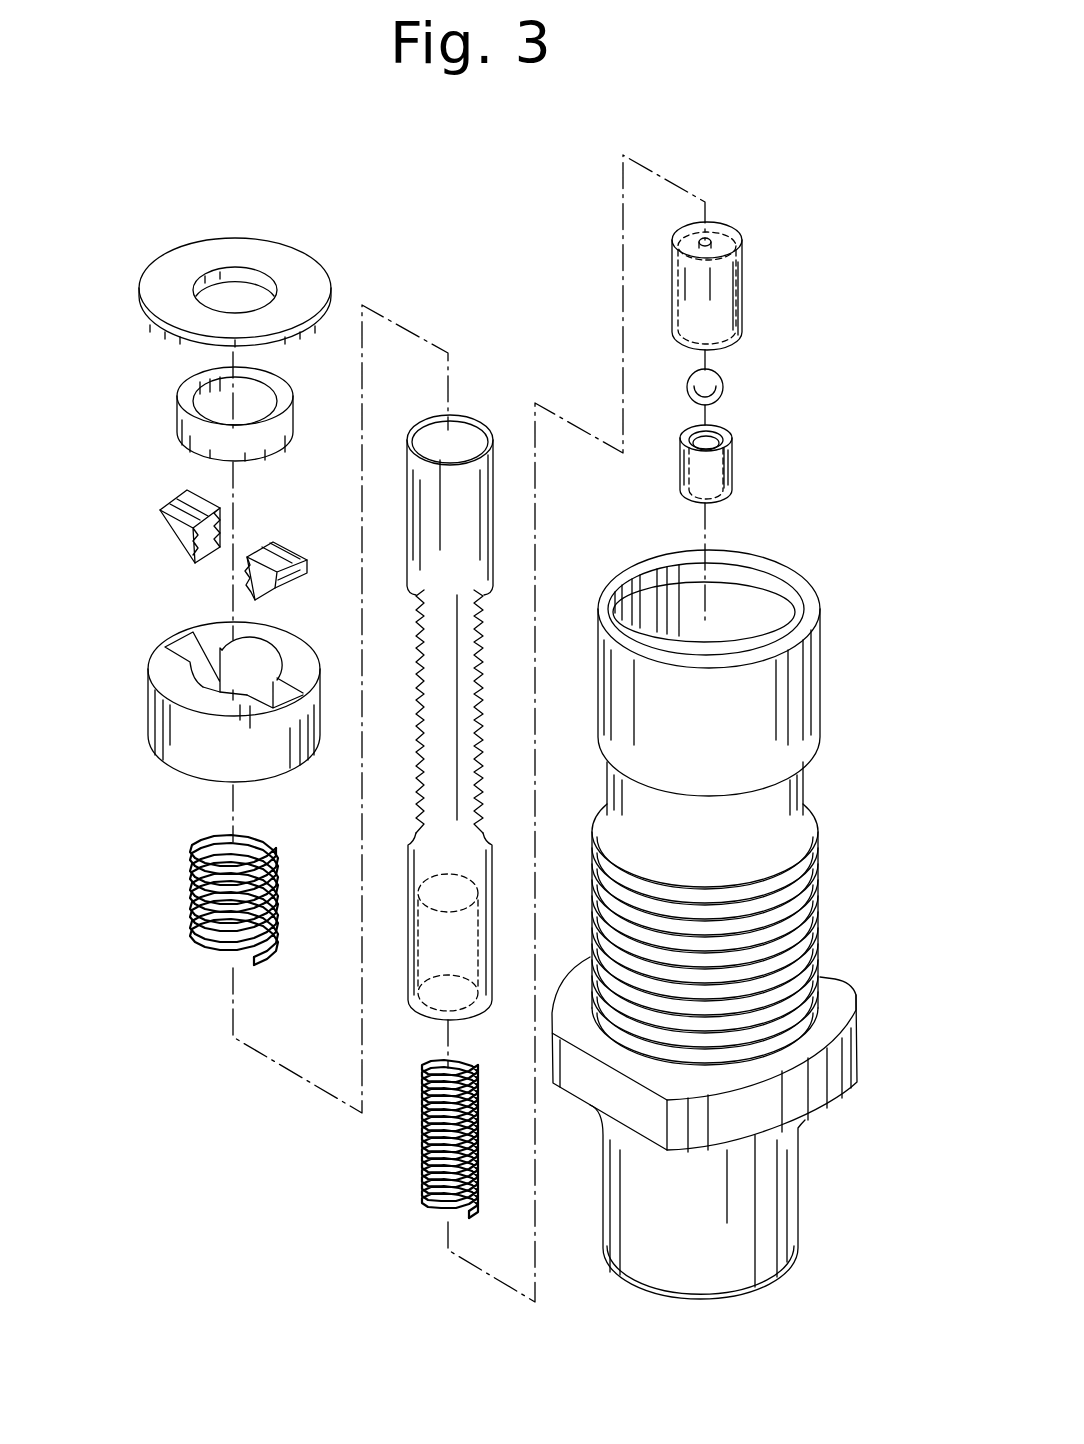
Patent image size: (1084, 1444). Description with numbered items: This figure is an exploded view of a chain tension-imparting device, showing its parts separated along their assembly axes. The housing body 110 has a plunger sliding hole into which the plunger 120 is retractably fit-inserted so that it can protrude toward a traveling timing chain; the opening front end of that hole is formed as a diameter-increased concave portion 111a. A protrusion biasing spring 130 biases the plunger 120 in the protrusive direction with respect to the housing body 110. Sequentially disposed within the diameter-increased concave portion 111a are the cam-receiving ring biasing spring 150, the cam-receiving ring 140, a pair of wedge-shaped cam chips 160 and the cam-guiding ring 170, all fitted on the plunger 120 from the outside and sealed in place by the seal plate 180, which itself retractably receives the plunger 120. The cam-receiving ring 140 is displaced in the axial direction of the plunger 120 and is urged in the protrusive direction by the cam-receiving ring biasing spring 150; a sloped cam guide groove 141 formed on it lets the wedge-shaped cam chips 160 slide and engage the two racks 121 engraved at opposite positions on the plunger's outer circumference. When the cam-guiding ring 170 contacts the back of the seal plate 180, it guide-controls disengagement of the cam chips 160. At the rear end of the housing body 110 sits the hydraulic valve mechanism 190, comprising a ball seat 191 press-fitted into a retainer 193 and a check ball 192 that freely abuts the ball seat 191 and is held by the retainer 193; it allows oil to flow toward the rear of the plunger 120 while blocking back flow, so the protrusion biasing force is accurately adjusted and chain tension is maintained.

The housing body 110 is at (744, 919).
The diameter-increased concave portion of the plunger sliding hole 111a is at (752, 609).
The plunger 120 is at (440, 665).
The rack 121 is at (415, 793).
The protrusion biasing spring 130 is at (420, 1172).
The cam-receiving ring 140 is at (209, 683).
The sloped cam guide groove 141 is at (187, 645).
The cam-receiving ring biasing spring 150 is at (190, 855).
The wedge-shaped cam chip 160 is at (175, 500).
The cam-guiding ring 170 is at (180, 400).
The seal plate 180 is at (176, 262).
The hydraulic valve mechanism 190 is at (798, 362).
The ball seat 191 is at (757, 464).
The check ball 192 is at (724, 387).
The retainer 193 is at (745, 300).